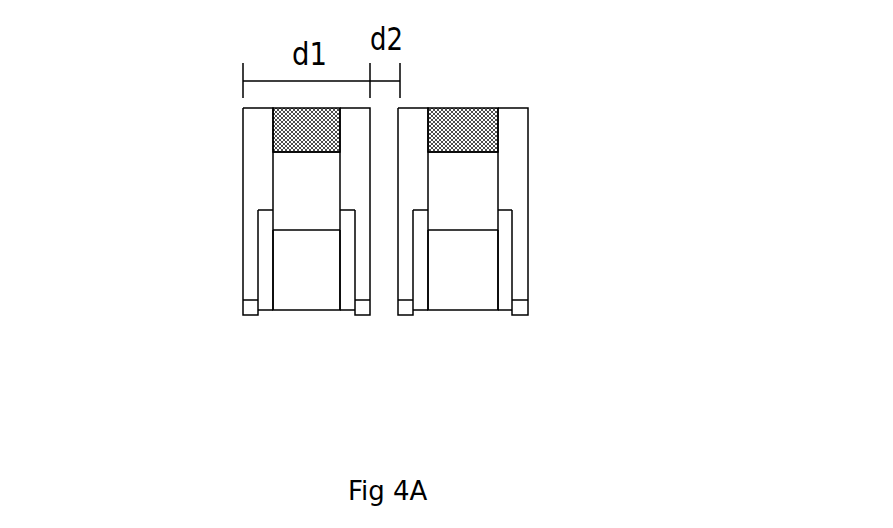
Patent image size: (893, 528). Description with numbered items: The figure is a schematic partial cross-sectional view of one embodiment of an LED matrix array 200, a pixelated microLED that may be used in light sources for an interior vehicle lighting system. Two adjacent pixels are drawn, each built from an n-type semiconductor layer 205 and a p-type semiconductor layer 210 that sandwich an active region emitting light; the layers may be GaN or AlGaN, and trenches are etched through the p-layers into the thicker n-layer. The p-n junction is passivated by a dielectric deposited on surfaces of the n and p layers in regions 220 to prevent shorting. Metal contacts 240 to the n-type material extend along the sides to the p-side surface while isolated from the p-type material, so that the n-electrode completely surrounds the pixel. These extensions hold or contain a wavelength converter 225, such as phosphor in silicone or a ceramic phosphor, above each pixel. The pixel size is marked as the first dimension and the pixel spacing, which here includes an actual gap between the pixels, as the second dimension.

The LED matrix array 200 is at (579, 240).
The n-type semiconductor layer 205 is at (285, 174).
The p-type semiconductor layer 210 is at (285, 265).
The dielectric regions 220 is at (502, 360).
The wavelength converter 225 is at (455, 127).
The metal contacts 240 is at (508, 192).